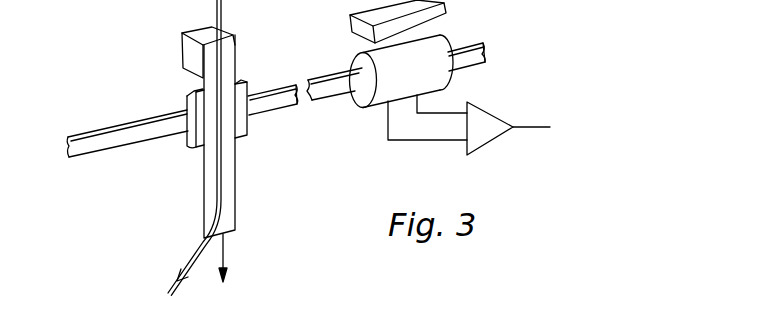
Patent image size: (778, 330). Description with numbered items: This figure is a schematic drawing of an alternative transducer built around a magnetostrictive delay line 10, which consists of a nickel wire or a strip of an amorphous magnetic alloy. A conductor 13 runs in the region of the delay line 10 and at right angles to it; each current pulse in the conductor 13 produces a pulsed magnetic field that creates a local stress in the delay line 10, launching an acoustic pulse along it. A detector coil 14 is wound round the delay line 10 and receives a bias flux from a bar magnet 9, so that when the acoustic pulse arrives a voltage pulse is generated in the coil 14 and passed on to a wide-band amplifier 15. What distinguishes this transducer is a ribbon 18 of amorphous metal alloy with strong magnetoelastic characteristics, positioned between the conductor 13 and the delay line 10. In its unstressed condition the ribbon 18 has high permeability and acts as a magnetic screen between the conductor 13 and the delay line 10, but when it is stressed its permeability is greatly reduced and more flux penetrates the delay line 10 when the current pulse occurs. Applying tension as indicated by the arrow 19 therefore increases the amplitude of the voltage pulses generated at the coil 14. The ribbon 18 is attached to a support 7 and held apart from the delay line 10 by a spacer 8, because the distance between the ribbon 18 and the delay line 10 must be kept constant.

The support 7 is at (191, 53).
The spacer 8 is at (205, 158).
The bar magnet 9 is at (432, 21).
The magnetostrictive delay line 10 is at (106, 142).
The conductor 13 is at (224, 11).
The detector coil 14 is at (437, 74).
The wide-band amplifier 15 is at (483, 145).
The ribbon 18 is at (233, 170).
The arrow 19 is at (228, 257).